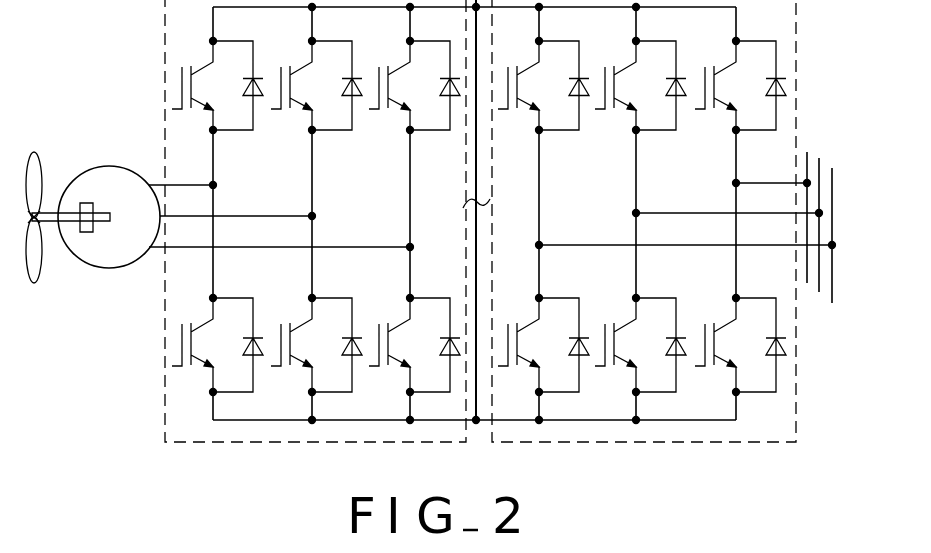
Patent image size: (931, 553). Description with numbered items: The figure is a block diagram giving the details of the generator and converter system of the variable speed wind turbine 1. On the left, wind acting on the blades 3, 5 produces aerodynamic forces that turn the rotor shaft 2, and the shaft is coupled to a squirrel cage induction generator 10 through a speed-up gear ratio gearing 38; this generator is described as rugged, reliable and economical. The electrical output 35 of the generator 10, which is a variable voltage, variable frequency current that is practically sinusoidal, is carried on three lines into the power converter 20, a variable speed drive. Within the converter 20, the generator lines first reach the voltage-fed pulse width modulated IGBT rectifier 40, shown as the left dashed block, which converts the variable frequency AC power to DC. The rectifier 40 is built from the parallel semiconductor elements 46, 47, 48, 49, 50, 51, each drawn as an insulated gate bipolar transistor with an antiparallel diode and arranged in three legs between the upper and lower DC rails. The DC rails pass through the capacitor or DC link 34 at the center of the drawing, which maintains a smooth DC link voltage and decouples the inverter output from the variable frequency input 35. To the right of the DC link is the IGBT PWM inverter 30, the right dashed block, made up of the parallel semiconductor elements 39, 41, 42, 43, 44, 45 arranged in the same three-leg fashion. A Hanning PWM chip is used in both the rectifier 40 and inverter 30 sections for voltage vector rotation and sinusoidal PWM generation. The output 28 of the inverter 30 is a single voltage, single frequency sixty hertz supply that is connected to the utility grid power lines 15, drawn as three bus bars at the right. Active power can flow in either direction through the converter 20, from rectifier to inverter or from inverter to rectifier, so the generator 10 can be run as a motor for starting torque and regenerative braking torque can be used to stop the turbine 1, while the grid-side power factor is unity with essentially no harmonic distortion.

The wind turbine 1 is at (91, 217).
The rotor shaft 2 is at (50, 212).
The blade 3 is at (39, 152).
The blade 5 is at (26, 275).
The squirrel cage induction generator 10 is at (138, 258).
The utility grid power lines 15 is at (867, 237).
The converter 20 is at (495, 473).
The output 28 is at (702, 245).
The PWM inverter 30 is at (617, 443).
The DC link 34 is at (490, 199).
The electrical output 35 is at (185, 185).
The gearing 38 is at (87, 232).
The semiconductor element 39 is at (730, 98).
The rectifier 40 is at (327, 443).
The semiconductor element 41 is at (730, 358).
The semiconductor element 42 is at (630, 98).
The semiconductor element 43 is at (630, 358).
The semiconductor element 44 is at (533, 98).
The semiconductor element 45 is at (533, 358).
The semiconductor element 46 is at (404, 98).
The semiconductor element 47 is at (404, 358).
The semiconductor element 48 is at (306, 98).
The semiconductor element 49 is at (306, 358).
The semiconductor element 50 is at (207, 98).
The semiconductor element 51 is at (207, 358).